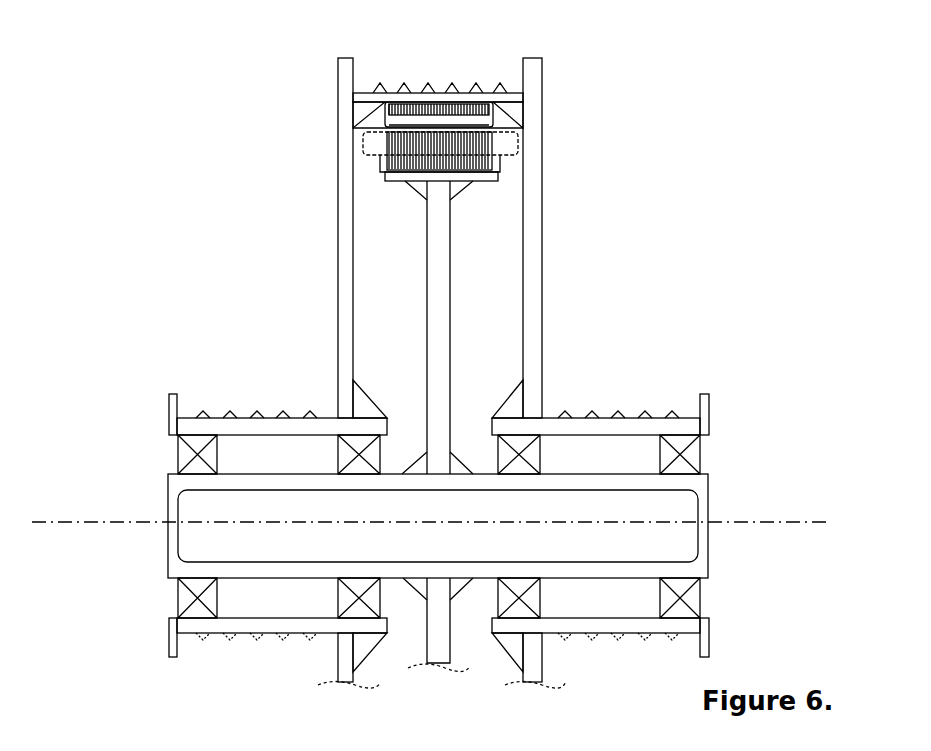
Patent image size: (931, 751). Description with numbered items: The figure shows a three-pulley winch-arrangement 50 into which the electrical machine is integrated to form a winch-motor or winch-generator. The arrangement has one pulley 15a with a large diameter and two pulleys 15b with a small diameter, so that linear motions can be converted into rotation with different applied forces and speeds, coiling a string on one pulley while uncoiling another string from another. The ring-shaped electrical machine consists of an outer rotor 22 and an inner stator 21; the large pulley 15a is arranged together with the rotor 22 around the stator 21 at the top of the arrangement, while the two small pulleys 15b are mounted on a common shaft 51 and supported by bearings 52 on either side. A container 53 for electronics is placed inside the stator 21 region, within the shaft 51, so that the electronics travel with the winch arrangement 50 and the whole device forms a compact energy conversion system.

The winch-arrangement 50 is at (307, 252).
The pulley 15a is at (410, 83).
The outer rotor 22 is at (497, 115).
The inner stator 21 is at (517, 152).
The pulley 15b is at (230, 410).
The bearings 52 is at (180, 450).
The shaft 51 is at (178, 488).
The container for electronics 53 is at (678, 515).